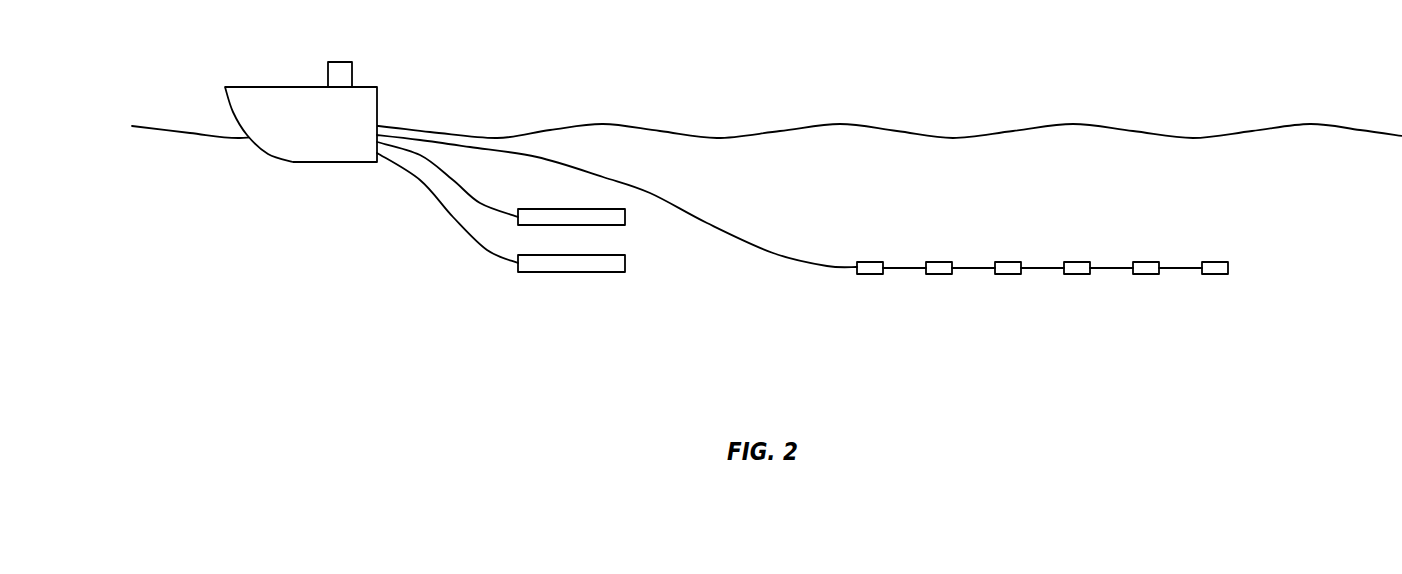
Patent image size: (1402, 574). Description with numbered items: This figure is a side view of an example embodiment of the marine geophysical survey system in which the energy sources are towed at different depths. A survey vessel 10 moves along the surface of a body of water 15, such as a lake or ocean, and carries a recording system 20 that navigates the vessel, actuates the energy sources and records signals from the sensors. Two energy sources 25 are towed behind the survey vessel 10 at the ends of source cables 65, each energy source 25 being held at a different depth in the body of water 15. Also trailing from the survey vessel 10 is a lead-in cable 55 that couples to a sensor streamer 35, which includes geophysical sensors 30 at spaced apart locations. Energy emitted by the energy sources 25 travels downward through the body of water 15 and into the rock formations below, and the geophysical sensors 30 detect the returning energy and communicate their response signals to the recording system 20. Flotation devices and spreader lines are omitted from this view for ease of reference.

The survey vessel 10 is at (368, 87).
The body of water 15 is at (150, 274).
The recording system 20 is at (328, 74).
The energy source 25 is at (552, 209).
The geophysical sensor 30 is at (870, 274).
The sensor streamer 35 is at (975, 268).
The lead-in cable 55 is at (698, 213).
The source cable 65 is at (452, 182).